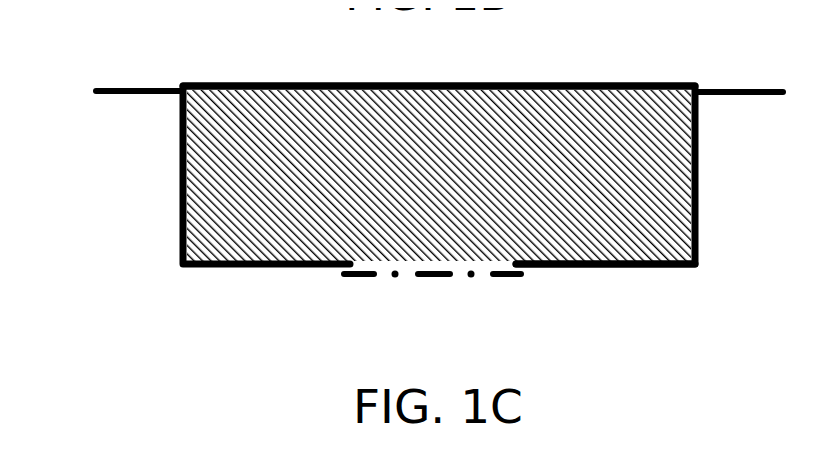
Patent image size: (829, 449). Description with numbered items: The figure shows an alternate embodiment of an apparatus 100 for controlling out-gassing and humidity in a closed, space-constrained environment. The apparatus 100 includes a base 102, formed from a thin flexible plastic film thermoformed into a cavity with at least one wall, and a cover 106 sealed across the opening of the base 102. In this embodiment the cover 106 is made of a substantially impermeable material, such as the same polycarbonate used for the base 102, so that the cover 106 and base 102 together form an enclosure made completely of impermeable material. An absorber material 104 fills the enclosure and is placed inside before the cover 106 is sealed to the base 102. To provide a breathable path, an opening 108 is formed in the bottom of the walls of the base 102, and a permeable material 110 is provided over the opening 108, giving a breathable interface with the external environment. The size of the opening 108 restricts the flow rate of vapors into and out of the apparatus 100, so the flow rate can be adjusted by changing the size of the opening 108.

The apparatus 100 is at (129, 51).
The base 102 is at (172, 184).
The absorber material 104 is at (308, 233).
The cover 106 is at (290, 77).
The opening 108 is at (413, 252).
The permeable material 110 is at (511, 268).